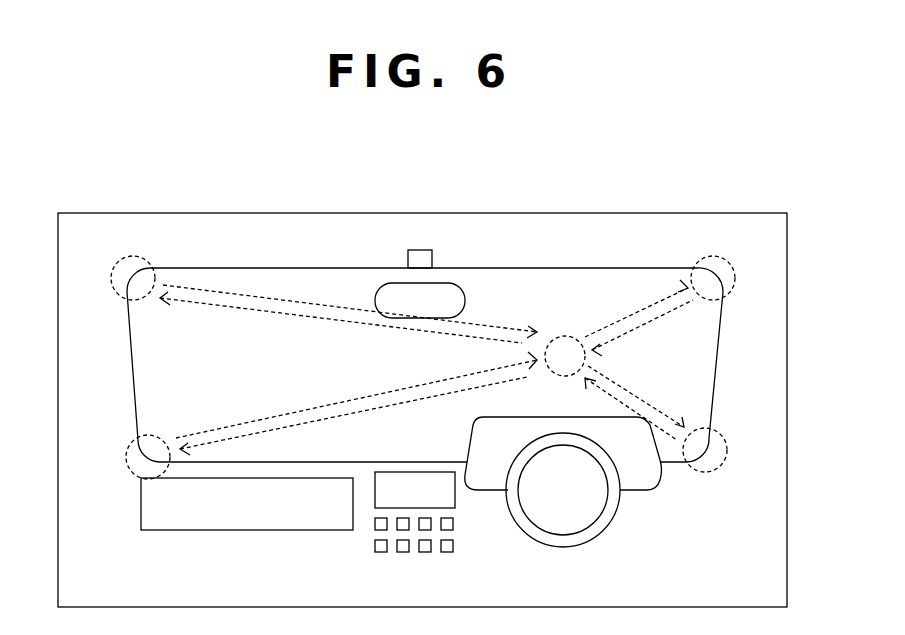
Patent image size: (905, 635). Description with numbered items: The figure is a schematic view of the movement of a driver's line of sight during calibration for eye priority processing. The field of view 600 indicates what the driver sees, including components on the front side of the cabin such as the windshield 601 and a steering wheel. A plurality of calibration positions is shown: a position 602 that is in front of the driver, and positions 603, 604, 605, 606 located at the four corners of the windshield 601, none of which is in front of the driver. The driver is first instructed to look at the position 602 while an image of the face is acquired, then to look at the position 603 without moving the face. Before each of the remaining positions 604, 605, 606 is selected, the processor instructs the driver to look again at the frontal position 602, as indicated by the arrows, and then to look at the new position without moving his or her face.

The field of view 600 is at (545, 213).
The windshield 601 is at (590, 267).
The position 602 is at (568, 335).
The position 603 is at (167, 249).
The position 604 is at (155, 437).
The position 605 is at (744, 249).
The position 606 is at (725, 438).